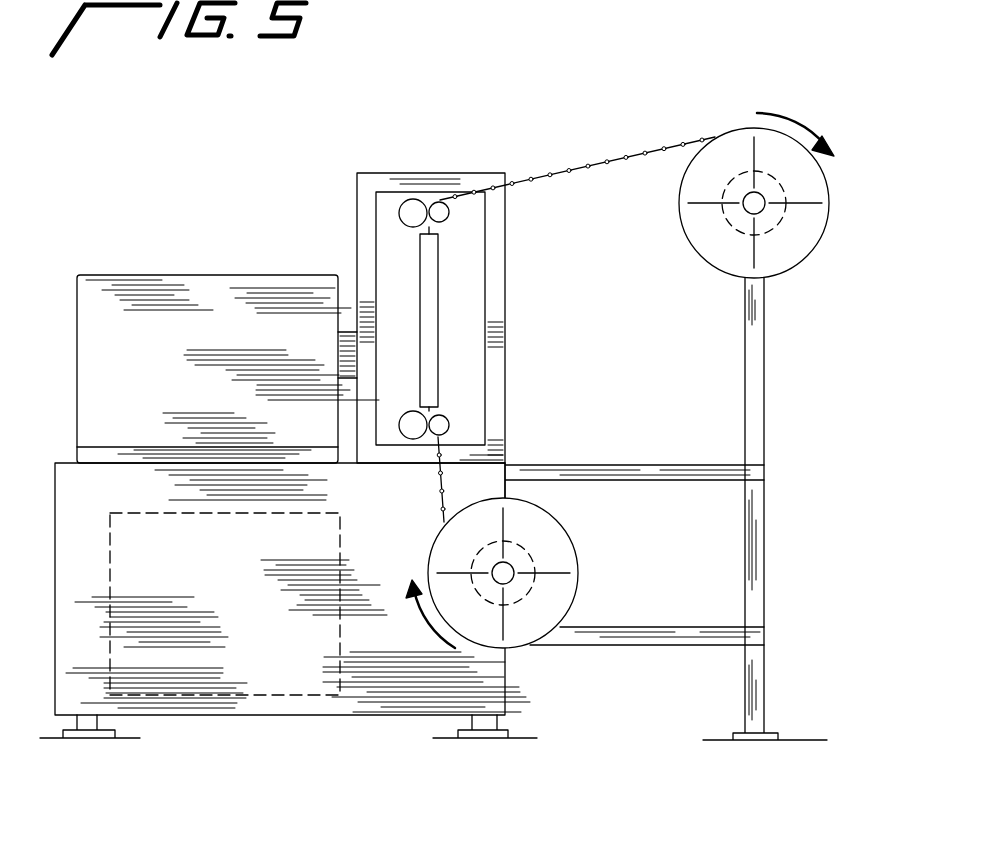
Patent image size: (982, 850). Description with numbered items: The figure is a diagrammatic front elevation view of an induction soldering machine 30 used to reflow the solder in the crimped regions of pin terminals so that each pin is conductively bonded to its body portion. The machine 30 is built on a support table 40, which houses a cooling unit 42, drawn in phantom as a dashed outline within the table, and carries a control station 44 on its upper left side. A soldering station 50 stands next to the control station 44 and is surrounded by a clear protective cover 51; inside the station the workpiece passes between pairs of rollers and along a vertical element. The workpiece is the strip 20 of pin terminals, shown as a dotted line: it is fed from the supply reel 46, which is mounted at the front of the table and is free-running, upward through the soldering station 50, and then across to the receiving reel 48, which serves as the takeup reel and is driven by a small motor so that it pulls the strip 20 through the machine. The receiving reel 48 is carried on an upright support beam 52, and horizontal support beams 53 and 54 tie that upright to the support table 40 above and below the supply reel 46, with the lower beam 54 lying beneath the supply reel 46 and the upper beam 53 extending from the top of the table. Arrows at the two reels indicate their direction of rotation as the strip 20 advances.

The strip 20 is at (617, 158).
The induction soldering machine 30 is at (767, 185).
The support table 40 is at (240, 715).
The cooling unit 42 is at (110, 622).
The control station 44 is at (75, 298).
The supply reel 46 is at (583, 577).
The receiving reel 48 is at (802, 262).
The soldering station 50 is at (425, 170).
The clear protective cover 51 is at (357, 205).
The support beam 52 is at (764, 570).
The support beam 53 is at (645, 466).
The support beam 54 is at (677, 645).